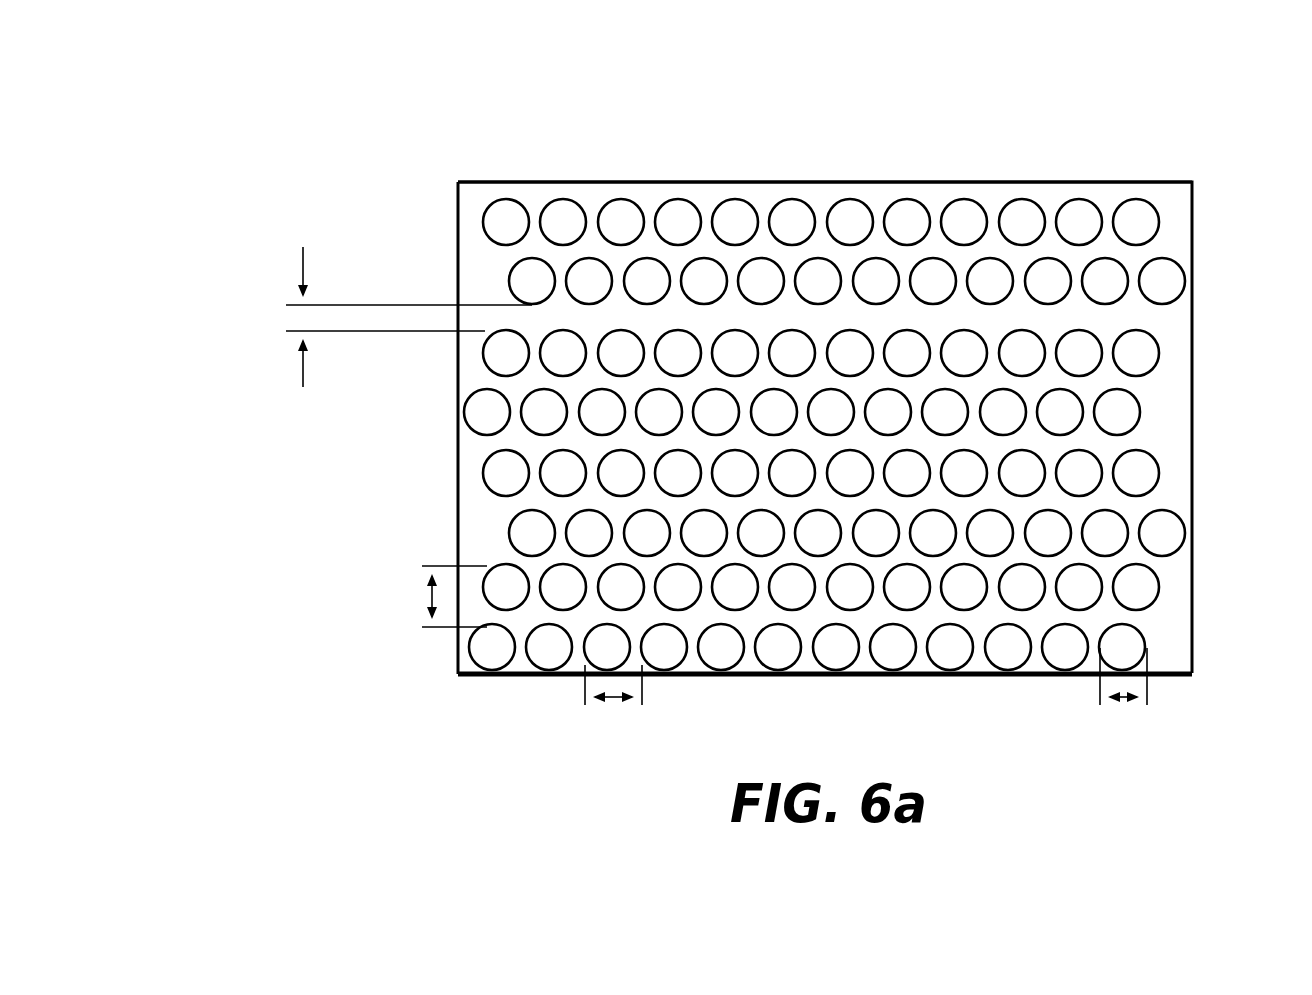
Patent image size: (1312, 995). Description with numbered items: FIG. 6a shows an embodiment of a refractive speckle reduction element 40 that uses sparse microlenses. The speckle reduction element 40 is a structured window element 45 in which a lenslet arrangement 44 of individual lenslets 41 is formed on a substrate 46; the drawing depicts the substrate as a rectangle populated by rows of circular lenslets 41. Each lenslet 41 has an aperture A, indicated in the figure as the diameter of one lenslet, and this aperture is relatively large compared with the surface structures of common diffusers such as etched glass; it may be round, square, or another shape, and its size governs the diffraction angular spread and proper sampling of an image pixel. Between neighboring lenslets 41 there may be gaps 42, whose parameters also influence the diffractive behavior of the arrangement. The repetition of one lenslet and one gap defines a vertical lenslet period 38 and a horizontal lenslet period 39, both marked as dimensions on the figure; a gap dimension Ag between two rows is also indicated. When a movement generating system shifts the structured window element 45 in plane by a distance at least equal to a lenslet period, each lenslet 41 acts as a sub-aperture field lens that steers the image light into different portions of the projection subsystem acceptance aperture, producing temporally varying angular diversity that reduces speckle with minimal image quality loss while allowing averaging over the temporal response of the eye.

The speckle reduction element 40 is at (330, 84).
The lenslet 41 is at (504, 199).
The gap 42 is at (765, 217).
The lenslet arrangement 44 is at (1178, 203).
The structured window element 45 is at (1036, 170).
The substrate 46 is at (457, 492).
The vertical lenslet period 38 is at (432, 597).
The horizontal lenslet period 39 is at (618, 699).
The aperture A is at (1127, 699).
The gap between rows Ag is at (303, 270).